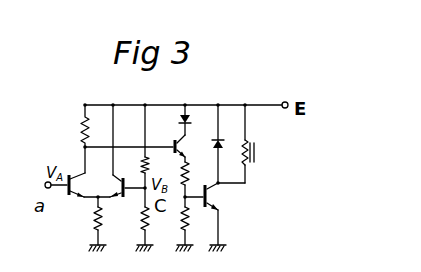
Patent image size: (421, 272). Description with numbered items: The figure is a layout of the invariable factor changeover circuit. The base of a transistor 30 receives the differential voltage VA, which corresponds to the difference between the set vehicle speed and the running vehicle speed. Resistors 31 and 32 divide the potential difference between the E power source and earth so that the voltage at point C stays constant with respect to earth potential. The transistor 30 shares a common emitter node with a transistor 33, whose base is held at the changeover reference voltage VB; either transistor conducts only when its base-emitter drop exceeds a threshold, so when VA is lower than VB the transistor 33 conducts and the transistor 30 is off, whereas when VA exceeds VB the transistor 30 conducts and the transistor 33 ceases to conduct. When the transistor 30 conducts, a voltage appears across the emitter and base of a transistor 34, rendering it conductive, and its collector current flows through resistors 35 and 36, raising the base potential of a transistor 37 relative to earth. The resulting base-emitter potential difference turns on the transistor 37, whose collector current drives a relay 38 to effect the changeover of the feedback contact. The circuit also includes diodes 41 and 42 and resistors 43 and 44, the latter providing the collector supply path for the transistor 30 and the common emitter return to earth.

The transistor 30 is at (65, 196).
The resistor 31 is at (147, 165).
The resistor 32 is at (148, 222).
The transistor 33 is at (127, 176).
The transistor 34 is at (177, 147).
The resistor 35 is at (199, 172).
The resistor 36 is at (188, 222).
The transistor 37 is at (210, 198).
The relay 38 is at (256, 152).
The diode 41 is at (197, 118).
The diode 42 is at (228, 152).
The resistor 43 is at (81, 131).
The resistor 44 is at (102, 222).